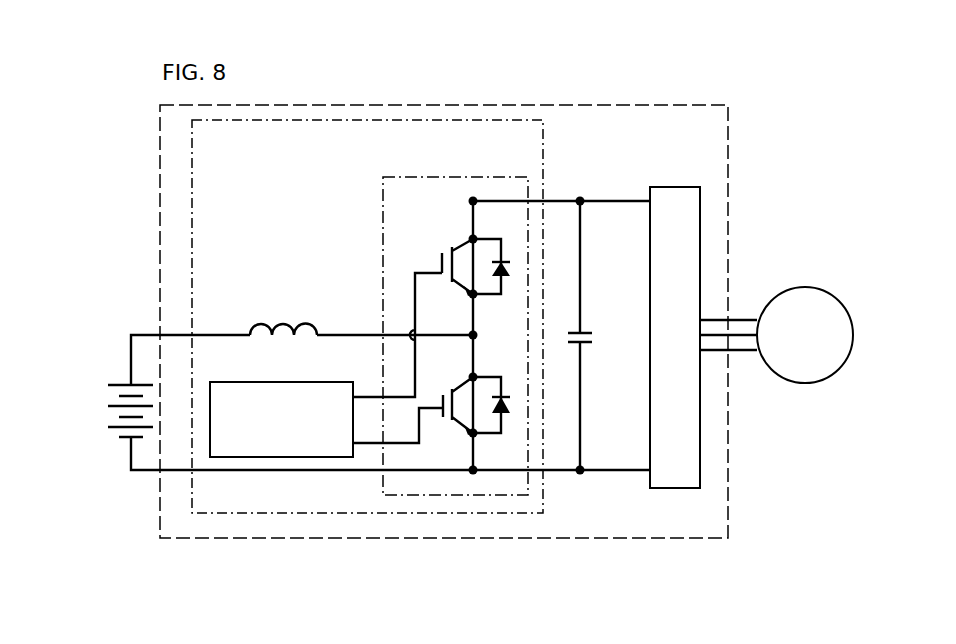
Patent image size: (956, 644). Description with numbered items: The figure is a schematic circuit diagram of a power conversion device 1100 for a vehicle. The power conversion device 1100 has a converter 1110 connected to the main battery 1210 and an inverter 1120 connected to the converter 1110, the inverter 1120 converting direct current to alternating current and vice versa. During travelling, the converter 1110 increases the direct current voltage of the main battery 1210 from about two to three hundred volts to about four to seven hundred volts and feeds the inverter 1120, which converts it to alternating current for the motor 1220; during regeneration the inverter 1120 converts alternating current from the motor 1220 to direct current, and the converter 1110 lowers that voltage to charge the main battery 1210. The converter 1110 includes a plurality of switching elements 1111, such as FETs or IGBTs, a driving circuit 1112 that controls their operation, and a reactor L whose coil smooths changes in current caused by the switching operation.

The power conversion device 1100 is at (158, 260).
The converter 1110 is at (545, 174).
The switching elements 1111 is at (445, 252).
The driving circuit 1112 is at (262, 457).
The inverter 1120 is at (700, 228).
The main battery 1210 is at (108, 410).
The motor 1220 is at (803, 385).
The reactor L is at (283, 325).